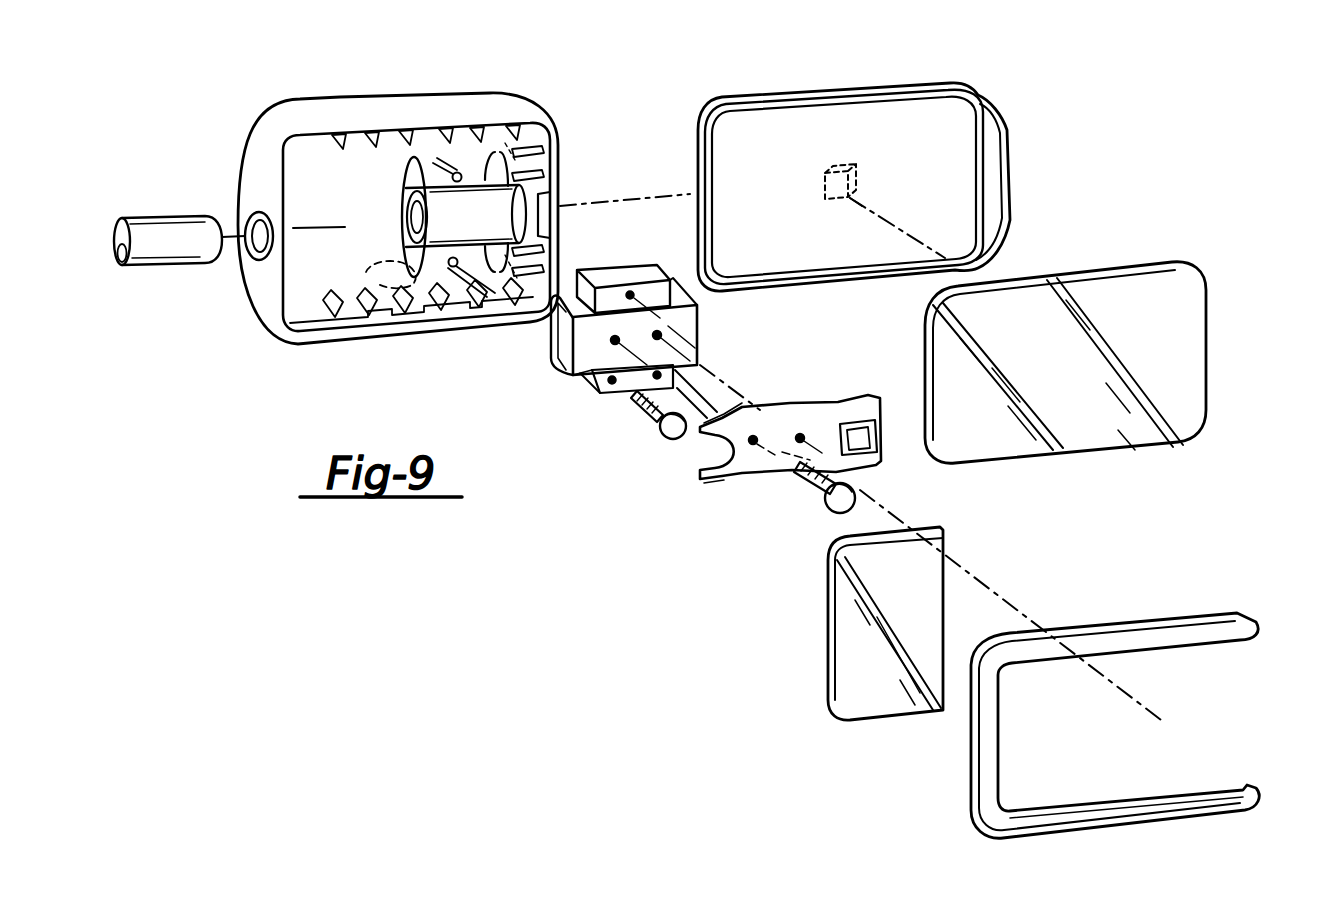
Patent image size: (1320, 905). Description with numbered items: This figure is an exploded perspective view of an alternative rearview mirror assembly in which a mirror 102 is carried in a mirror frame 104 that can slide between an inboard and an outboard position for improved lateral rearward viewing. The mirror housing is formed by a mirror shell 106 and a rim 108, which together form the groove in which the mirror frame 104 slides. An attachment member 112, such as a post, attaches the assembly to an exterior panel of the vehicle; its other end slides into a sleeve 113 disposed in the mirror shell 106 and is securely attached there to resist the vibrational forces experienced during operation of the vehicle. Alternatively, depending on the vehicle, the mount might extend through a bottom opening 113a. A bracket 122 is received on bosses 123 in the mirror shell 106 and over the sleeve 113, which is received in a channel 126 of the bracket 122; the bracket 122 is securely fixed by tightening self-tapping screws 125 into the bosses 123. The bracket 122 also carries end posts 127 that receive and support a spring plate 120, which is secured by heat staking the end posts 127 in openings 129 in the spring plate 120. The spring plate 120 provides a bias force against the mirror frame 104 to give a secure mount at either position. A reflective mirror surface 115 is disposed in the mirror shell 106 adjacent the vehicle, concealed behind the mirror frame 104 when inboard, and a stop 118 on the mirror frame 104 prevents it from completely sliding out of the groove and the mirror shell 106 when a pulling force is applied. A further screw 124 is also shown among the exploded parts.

The mirror 102 is at (1172, 303).
The mirror frame 104 is at (985, 108).
The mirror shell 106 is at (300, 123).
The rim 108 is at (1223, 616).
The attachment member 112 is at (156, 248).
The sleeve 113 is at (494, 165).
The bottom opening 113a is at (377, 268).
The reflective mirror surface 115 is at (860, 693).
The stop 118 is at (825, 175).
The spring plate 120 is at (743, 478).
The bracket 122 is at (597, 347).
The bosses 123 is at (455, 172).
The screw 124 is at (863, 494).
The self-tapping screws 125 is at (647, 418).
The channel 126 is at (545, 333).
The end posts 127 is at (665, 337).
The openings 129 is at (798, 432).